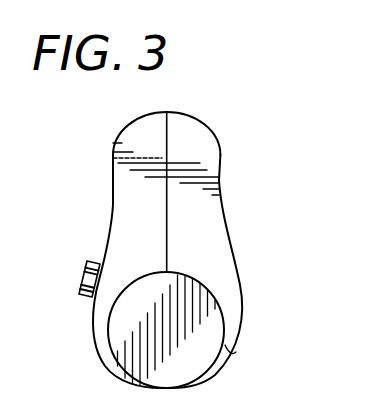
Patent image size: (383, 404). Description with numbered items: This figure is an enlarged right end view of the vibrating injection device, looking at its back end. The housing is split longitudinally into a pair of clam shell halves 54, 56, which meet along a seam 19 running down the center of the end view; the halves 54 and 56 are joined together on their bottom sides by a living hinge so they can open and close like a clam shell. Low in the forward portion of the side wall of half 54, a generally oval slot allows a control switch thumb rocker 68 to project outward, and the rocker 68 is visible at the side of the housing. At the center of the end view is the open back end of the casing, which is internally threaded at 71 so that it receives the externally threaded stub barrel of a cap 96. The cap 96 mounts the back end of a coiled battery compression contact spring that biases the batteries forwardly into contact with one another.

The seam line 19 is at (167, 225).
The clam shell half 54 is at (112, 211).
The clam shell half 56 is at (222, 218).
The control switch thumb rocker 68 is at (80, 281).
The internal threads 71 is at (216, 311).
The cap 96 is at (226, 347).